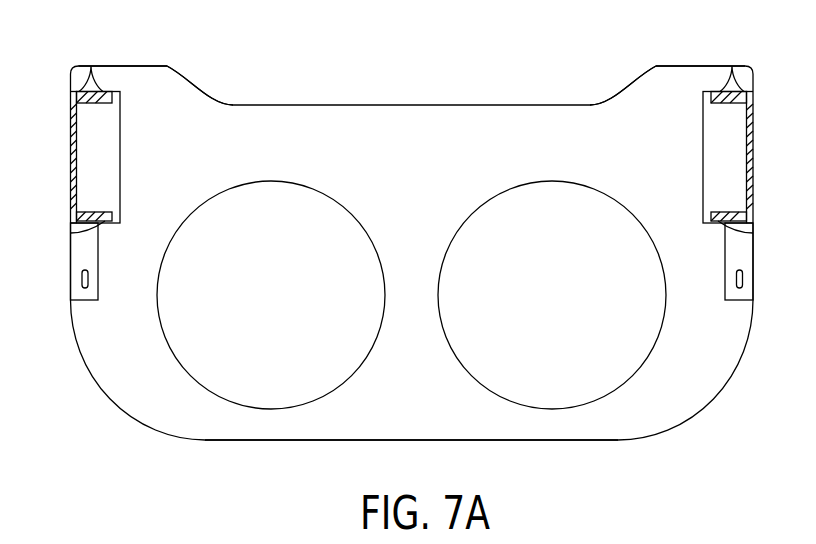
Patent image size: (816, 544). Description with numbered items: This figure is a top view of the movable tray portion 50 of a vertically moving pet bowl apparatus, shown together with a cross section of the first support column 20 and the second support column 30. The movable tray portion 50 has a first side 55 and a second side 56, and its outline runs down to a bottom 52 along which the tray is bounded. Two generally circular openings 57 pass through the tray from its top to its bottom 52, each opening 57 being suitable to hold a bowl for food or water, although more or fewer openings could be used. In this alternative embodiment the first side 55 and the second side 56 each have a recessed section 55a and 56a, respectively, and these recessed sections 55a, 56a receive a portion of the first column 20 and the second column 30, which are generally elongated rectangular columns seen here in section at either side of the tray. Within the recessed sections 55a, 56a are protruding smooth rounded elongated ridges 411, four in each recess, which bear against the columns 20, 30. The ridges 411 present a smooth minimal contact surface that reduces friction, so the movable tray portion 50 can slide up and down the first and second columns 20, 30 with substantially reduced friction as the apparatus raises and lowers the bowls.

The first support column 20 is at (71, 153).
The second support column 30 is at (754, 152).
The movable tray portion 50 is at (416, 130).
The bottom 52 is at (212, 441).
The first side 55 is at (145, 65).
The recessed section 55a is at (103, 143).
The second side 56 is at (753, 85).
The recessed section 56a is at (715, 143).
The opening 57 is at (265, 388).
The protruding smooth rounded elongated ridge 411 is at (91, 66).